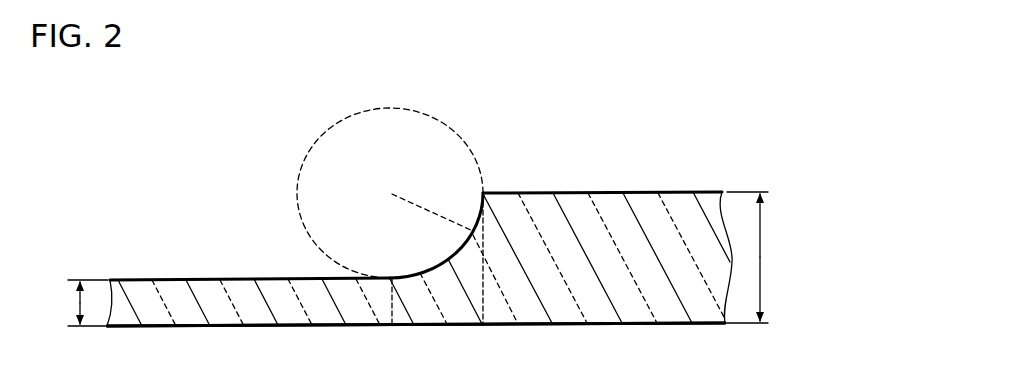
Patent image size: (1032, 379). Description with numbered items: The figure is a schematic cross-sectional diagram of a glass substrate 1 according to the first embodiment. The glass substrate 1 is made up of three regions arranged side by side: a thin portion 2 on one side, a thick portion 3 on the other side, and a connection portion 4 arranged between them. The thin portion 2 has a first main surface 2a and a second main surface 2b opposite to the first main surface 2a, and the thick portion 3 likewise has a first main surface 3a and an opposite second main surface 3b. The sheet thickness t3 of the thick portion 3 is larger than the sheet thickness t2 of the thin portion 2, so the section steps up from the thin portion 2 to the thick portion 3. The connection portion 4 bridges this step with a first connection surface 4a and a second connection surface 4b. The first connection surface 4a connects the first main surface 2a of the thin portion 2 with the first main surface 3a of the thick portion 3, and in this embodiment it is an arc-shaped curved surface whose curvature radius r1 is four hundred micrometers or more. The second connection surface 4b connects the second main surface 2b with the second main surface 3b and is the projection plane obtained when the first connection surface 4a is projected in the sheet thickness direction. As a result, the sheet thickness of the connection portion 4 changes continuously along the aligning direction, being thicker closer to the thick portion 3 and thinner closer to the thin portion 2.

The glass substrate 1 is at (425, 241).
The thin portion 2 is at (249, 323).
The first main surface 2a is at (210, 280).
The second main surface 2b is at (222, 327).
The thick portion 3 is at (607, 280).
The first main surface 3a is at (633, 192).
The second main surface 3b is at (660, 325).
The connection portion 4 is at (454, 286).
The first connection surface 4a is at (420, 278).
The second connection surface 4b is at (438, 327).
The curvature radius r1 is at (468, 232).
The sheet thickness of the thin portion t2 is at (82, 303).
The sheet thickness of the thick portion t3 is at (756, 257).